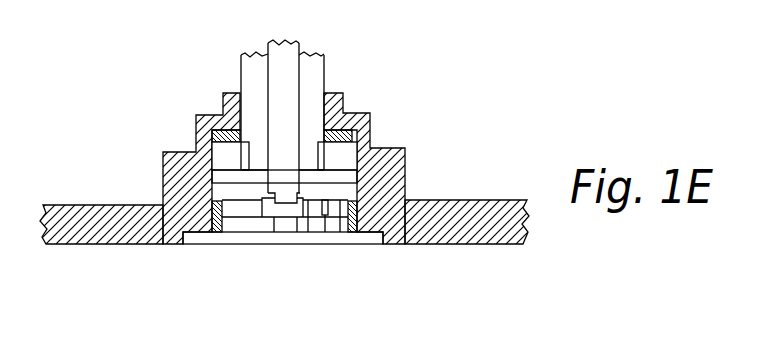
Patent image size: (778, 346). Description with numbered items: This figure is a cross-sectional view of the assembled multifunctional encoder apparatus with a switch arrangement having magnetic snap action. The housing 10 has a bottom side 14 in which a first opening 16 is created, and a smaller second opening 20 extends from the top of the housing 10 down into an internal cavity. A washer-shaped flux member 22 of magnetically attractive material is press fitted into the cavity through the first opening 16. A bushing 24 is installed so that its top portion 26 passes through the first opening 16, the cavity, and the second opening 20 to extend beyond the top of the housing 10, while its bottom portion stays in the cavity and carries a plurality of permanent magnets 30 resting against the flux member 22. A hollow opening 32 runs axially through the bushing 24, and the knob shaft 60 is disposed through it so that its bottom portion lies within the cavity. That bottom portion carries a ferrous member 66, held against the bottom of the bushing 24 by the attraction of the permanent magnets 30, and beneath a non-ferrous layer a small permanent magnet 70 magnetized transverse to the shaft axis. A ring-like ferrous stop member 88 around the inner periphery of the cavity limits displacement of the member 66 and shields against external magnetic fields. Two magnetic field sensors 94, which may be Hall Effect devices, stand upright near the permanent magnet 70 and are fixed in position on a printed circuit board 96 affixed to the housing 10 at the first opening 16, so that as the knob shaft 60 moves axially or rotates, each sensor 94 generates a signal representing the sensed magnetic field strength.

The housing 10 is at (400, 166).
The bottom side 14 is at (153, 250).
The first opening 16 is at (293, 244).
The second opening 20 is at (343, 108).
The flux member 22 is at (372, 122).
The bushing 24 is at (320, 78).
The top portion 26 is at (318, 53).
The permanent magnets 30 is at (212, 144).
The hollow opening 32 is at (268, 93).
The knob shaft 60 is at (268, 62).
The member 66 is at (345, 177).
The small permanent magnet 70 is at (283, 199).
The stop member 88 is at (212, 218).
The magnetic field sensors 94 is at (330, 206).
The printed circuit board 96 is at (375, 240).